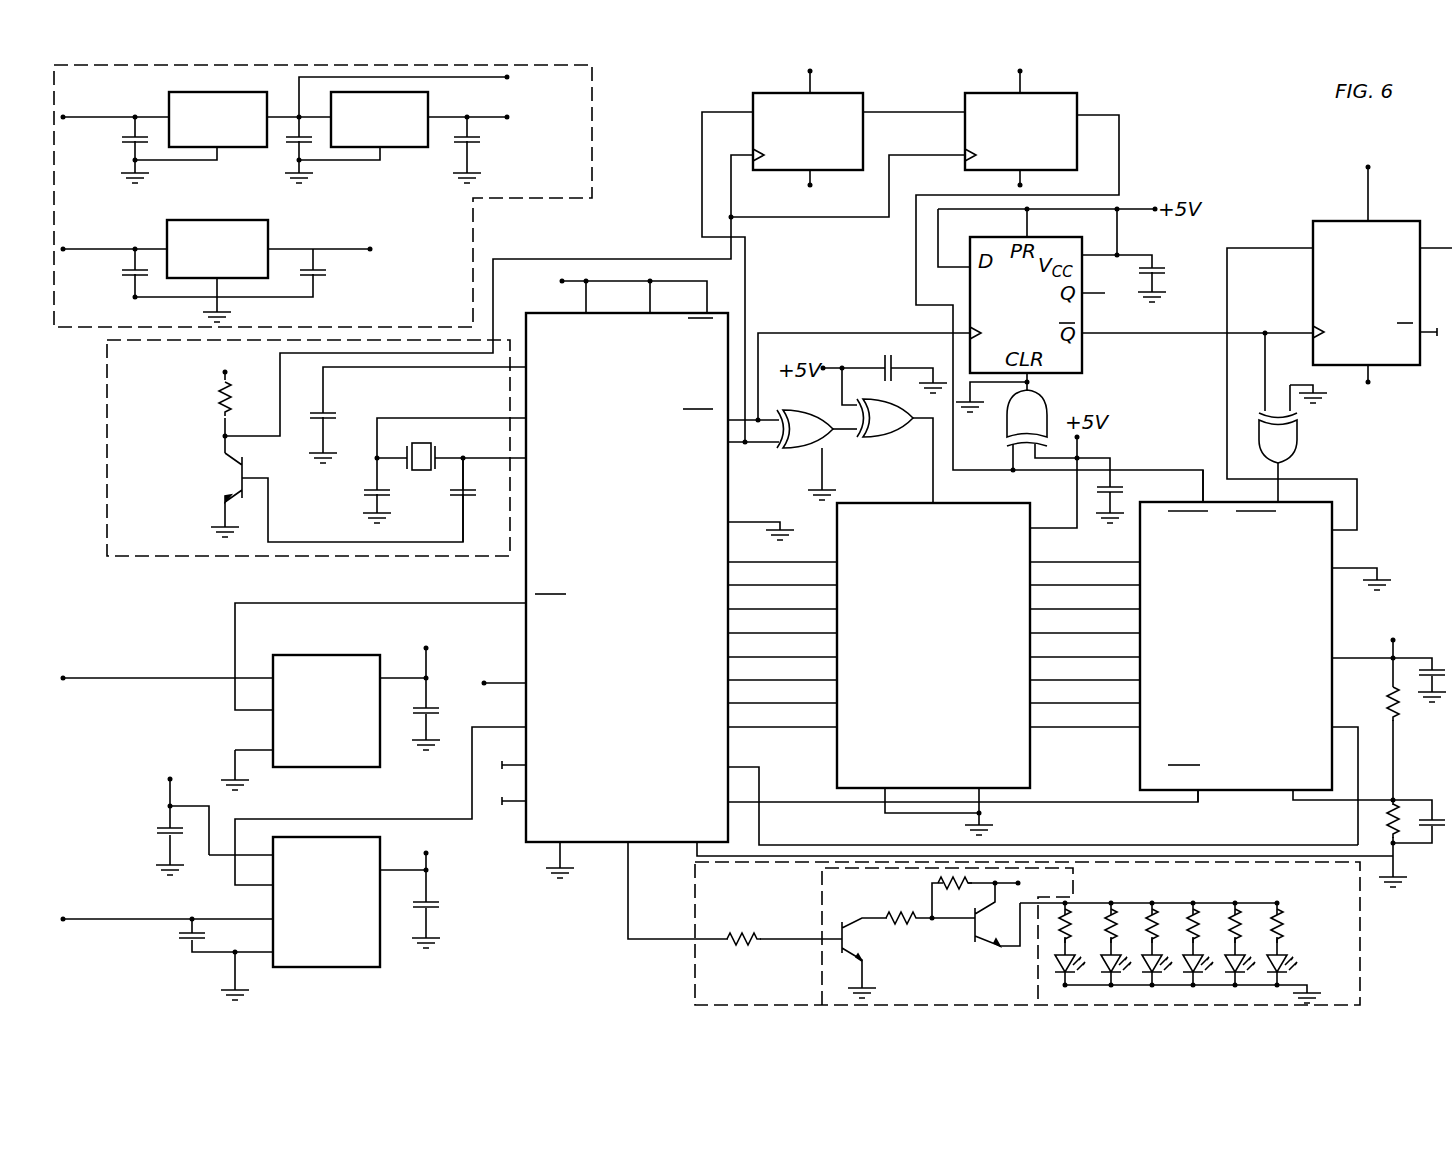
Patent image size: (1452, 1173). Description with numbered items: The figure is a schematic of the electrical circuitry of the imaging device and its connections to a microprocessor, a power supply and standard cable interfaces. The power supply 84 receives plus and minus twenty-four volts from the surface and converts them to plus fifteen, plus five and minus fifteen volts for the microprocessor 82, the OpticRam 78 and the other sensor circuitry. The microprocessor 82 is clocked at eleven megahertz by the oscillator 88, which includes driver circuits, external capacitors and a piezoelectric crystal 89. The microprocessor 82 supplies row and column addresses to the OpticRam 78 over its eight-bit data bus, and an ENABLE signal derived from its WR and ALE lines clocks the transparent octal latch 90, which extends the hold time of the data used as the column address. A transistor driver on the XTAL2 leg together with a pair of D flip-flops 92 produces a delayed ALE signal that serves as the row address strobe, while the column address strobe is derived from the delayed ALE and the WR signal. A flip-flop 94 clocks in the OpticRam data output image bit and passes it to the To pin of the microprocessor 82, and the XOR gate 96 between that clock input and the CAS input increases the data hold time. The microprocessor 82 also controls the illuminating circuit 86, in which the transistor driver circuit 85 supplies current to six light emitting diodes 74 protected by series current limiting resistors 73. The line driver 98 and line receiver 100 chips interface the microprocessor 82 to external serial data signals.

The current limiting resistors 73 is at (1285, 920).
The light emitting diodes 74 is at (1290, 961).
The OpticRam 78 is at (1240, 790).
The microprocessor 82 is at (595, 845).
The power supply 84 is at (592, 170).
The transistor driver circuit 85 is at (820, 979).
The illuminating circuit 86 is at (1058, 933).
The oscillator 88 is at (513, 355).
The piezoelectric crystal 89 is at (430, 446).
The transparent octal latch 90 is at (1030, 770).
The D flip-flops 92 is at (965, 128).
The flip-flop 94 is at (1376, 303).
The XOR gate 96 is at (1297, 436).
The 1488 driver 98 is at (365, 967).
The 1489 receiver 100 is at (365, 767).